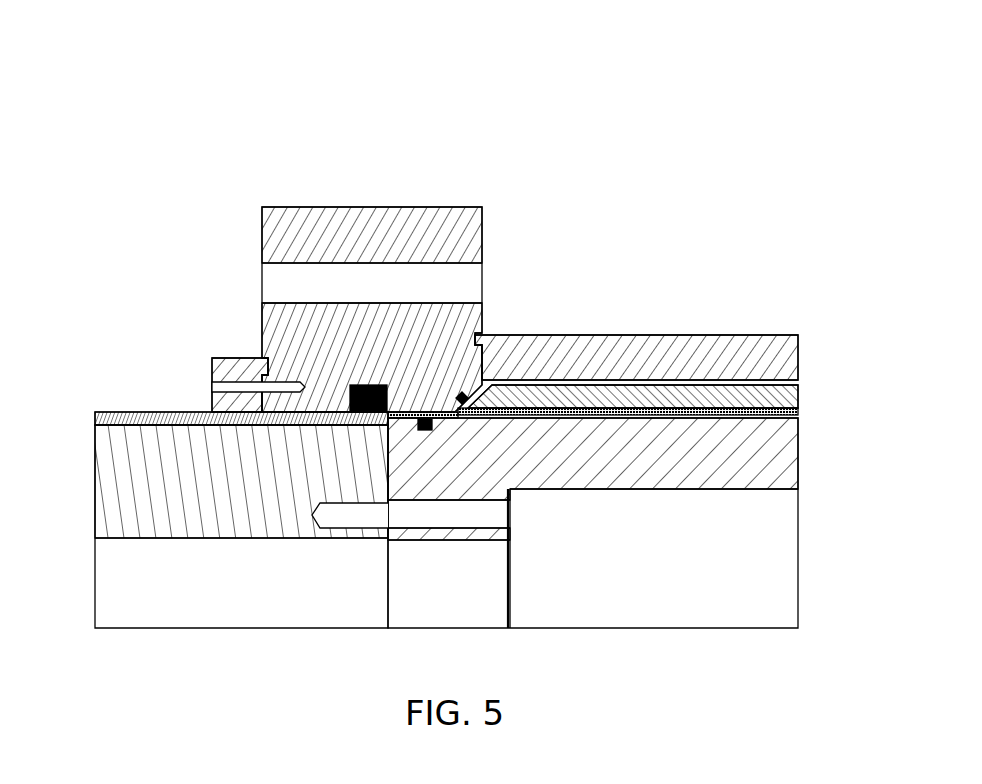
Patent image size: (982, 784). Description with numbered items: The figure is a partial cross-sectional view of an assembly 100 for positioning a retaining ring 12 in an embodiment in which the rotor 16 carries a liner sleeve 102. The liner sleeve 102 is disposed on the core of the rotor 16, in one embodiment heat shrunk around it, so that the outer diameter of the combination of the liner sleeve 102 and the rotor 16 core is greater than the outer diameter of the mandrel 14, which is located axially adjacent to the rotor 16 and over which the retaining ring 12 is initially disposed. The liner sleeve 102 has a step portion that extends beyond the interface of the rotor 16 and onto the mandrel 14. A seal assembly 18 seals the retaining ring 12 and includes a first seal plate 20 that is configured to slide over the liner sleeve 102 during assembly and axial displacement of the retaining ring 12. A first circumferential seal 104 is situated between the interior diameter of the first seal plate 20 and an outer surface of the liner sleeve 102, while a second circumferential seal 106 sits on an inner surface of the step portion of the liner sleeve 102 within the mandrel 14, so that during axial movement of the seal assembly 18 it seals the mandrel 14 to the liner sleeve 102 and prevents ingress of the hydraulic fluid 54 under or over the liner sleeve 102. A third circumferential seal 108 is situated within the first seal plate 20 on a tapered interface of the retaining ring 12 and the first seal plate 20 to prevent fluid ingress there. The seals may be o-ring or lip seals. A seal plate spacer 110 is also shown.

The assembly 100 is at (746, 64).
The seal assembly 18 is at (224, 199).
The first seal plate 20 is at (483, 238).
The first circumferential seal 104 is at (298, 390).
The third circumferential seal 108 is at (461, 397).
The seal plate spacer 110 is at (799, 352).
The retaining ring 12 is at (799, 398).
The fluid 54 is at (799, 414).
The mandrel 14 is at (682, 462).
The second circumferential seal 106 is at (428, 431).
The rotor 16 is at (100, 502).
The liner sleeve 102 is at (106, 412).